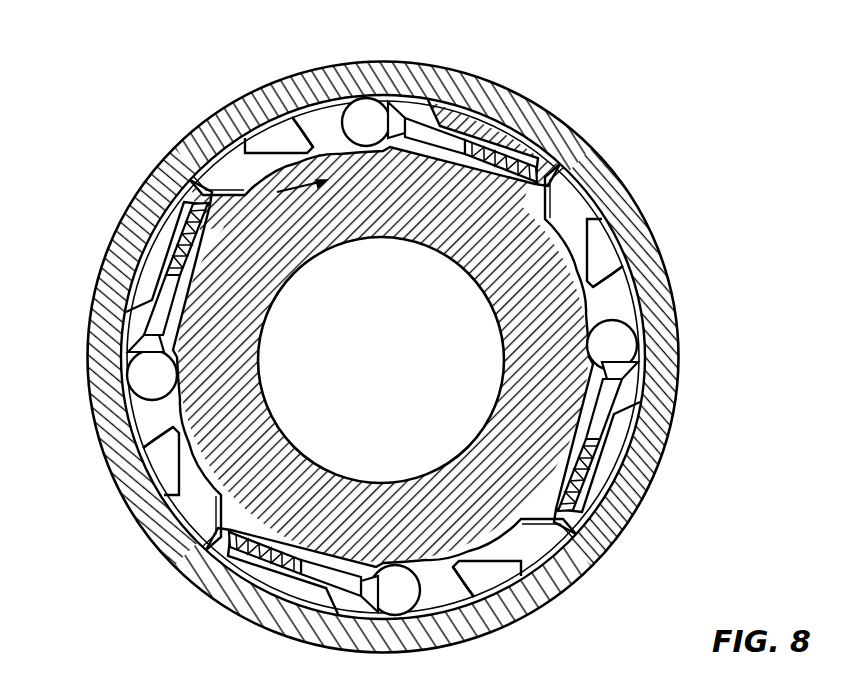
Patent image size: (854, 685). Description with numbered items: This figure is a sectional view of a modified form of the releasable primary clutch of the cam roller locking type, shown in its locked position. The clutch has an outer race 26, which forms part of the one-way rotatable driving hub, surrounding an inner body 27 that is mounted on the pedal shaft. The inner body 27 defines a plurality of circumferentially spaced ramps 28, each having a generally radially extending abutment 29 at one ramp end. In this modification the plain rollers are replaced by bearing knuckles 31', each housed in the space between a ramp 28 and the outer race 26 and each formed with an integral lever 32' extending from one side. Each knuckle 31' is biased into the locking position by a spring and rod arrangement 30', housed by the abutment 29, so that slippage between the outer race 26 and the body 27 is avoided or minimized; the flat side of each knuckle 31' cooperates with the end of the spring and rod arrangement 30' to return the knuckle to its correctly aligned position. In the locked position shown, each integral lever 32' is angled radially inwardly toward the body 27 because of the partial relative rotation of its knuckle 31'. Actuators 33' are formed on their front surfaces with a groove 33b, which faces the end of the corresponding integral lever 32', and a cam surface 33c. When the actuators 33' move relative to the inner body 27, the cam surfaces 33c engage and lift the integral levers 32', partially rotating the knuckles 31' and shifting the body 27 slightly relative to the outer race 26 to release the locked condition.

The outer race 26 is at (510, 103).
The inner body 27 is at (240, 500).
The ramp 28 is at (588, 376).
The abutment 29 is at (440, 100).
The spring and rod arrangement 30' is at (390, 381).
The bearing knuckle 31' is at (401, 353).
The integral lever 32' is at (409, 337).
The actuator 33' is at (401, 343).
The groove 33b is at (277, 150).
The cam surface 33c is at (300, 133).